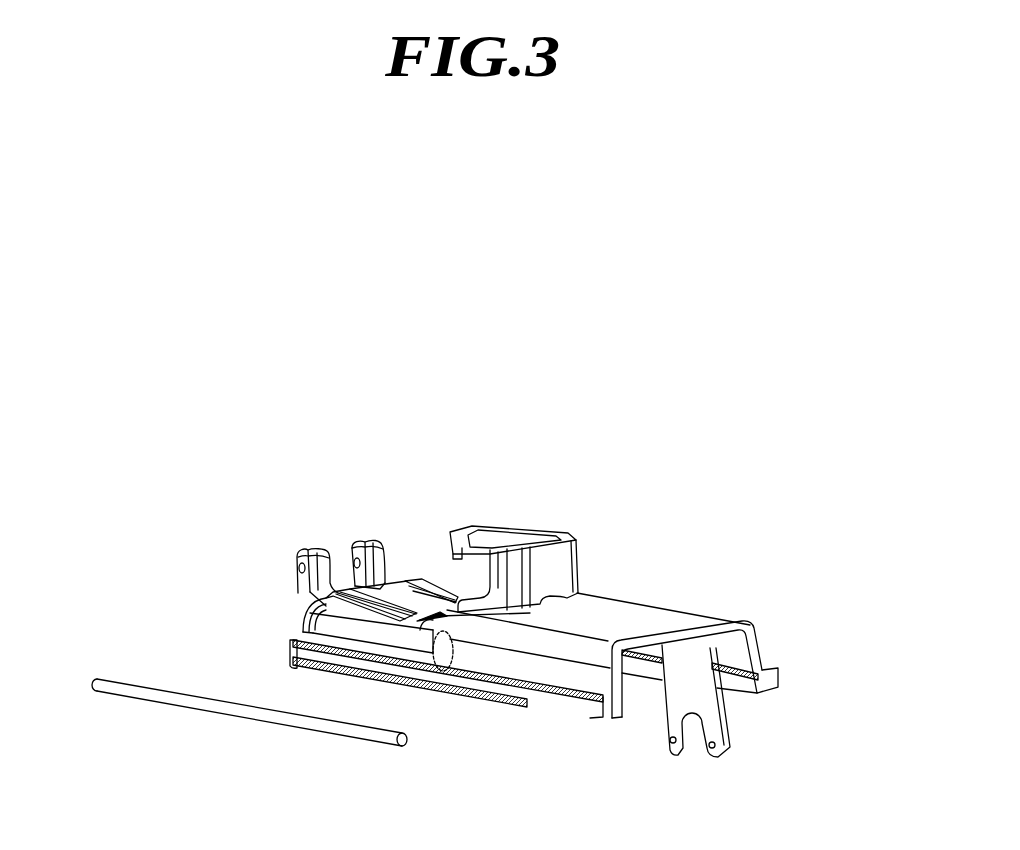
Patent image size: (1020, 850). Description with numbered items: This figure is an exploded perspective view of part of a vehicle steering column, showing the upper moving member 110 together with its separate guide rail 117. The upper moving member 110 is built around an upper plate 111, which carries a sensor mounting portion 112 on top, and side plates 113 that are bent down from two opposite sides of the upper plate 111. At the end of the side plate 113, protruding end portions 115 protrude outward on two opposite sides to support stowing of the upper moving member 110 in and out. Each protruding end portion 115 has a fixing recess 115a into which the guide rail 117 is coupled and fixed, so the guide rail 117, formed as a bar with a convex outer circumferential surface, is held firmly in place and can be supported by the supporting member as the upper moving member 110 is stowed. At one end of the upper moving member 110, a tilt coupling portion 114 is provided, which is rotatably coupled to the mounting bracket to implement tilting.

The upper moving member 110 is at (638, 526).
The upper plate 111 is at (668, 623).
The sensor mounting portion 112 is at (547, 564).
The side plate 113 is at (577, 670).
The tilt coupling portion 114 is at (300, 548).
The protruding end portion 115 is at (615, 708).
The fixing recess 115a is at (530, 697).
The guide rail 117 is at (225, 740).